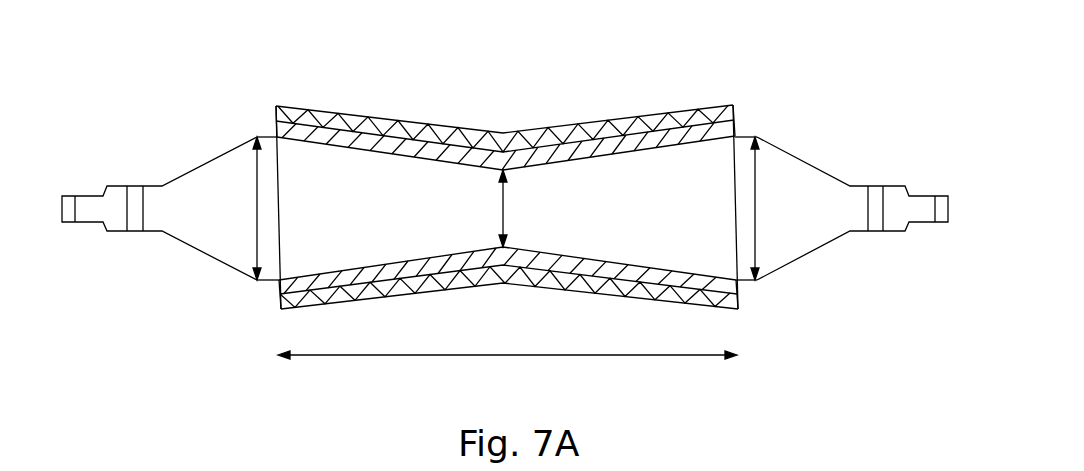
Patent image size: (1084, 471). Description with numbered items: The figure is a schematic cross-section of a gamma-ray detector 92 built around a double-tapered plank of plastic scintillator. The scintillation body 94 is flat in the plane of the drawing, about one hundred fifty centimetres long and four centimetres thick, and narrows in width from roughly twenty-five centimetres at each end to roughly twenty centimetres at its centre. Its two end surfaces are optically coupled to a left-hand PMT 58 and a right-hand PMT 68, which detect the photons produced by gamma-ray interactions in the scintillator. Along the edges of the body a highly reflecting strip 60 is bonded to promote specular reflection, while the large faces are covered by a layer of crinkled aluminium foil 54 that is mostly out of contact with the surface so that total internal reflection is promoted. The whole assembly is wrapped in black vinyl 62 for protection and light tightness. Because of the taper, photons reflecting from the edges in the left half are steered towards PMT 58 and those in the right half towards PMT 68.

The gamma-ray detector 92 is at (505, 206).
The scintillation body 94 is at (730, 165).
The layer of crinkled aluminium foil 54 is at (408, 125).
The reflecting strip 60 is at (567, 127).
The black vinyl layer 62 is at (310, 109).
The left-hand PMT 58 is at (188, 247).
The right-hand PMT 68 is at (822, 248).